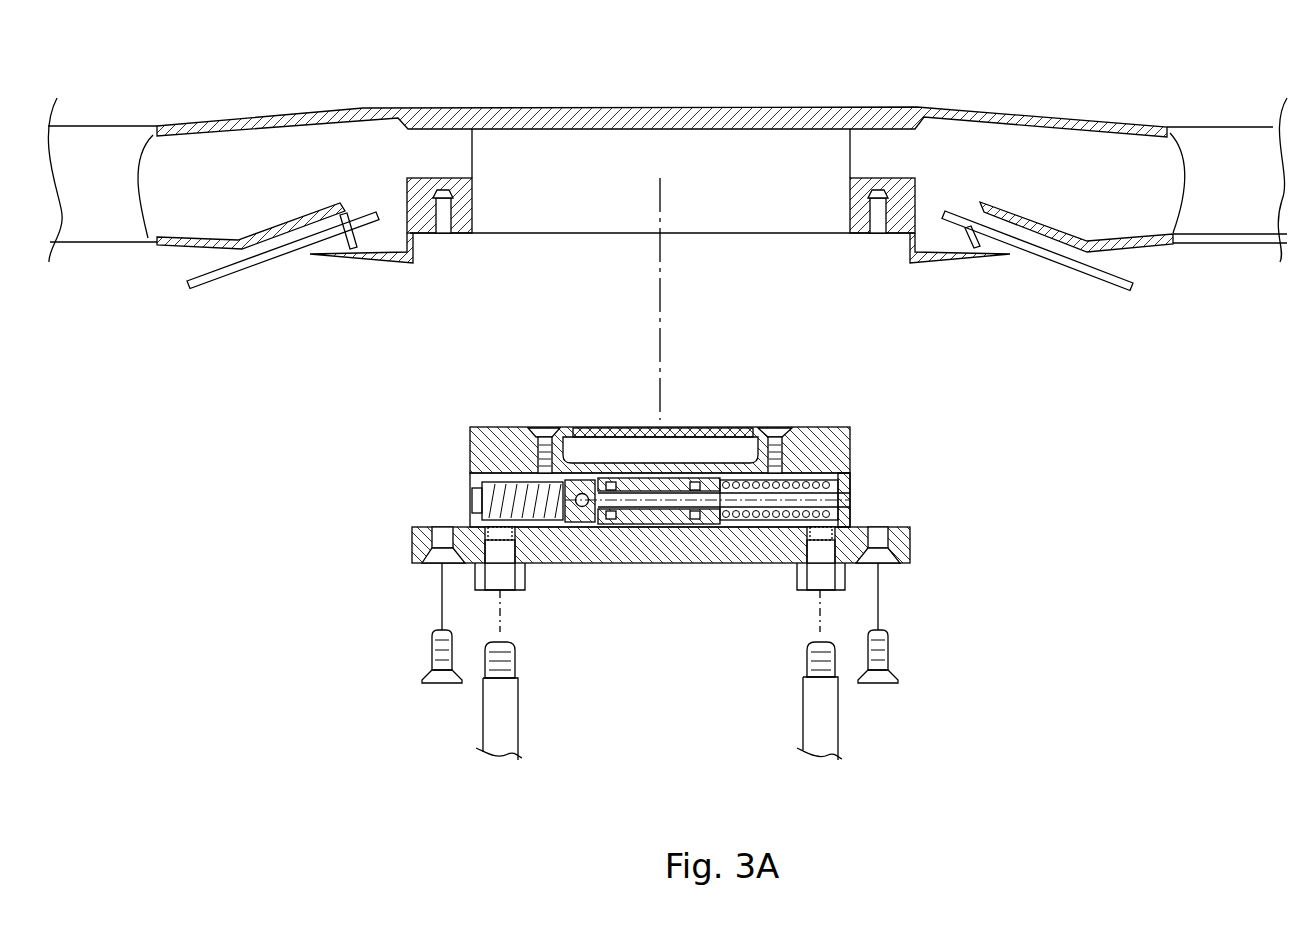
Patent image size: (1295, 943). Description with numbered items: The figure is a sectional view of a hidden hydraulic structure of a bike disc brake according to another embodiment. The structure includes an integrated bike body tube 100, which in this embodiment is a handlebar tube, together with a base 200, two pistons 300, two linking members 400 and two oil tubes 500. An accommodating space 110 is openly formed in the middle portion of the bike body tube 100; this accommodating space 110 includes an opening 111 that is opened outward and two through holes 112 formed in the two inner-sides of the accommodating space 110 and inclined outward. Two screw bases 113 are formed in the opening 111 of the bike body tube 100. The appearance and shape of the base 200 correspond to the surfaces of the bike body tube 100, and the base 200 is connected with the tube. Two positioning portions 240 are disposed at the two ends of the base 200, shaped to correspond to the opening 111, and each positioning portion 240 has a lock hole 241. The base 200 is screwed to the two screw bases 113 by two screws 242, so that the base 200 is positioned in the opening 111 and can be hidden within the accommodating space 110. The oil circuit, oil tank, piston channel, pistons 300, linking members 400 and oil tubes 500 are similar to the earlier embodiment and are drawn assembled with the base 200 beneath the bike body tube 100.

The bike body tube 100 is at (1228, 150).
The accommodating space 110 is at (750, 170).
The opening 111 is at (442, 272).
The through hole 112 is at (978, 204).
The screw base 113 is at (456, 177).
The base 200 is at (850, 453).
The positioning portion 240 is at (908, 540).
The lock hole 241 is at (887, 563).
The screw 242 is at (890, 657).
The piston 300 is at (583, 510).
The linking member 400 is at (197, 290).
The oil tube 500 is at (493, 720).